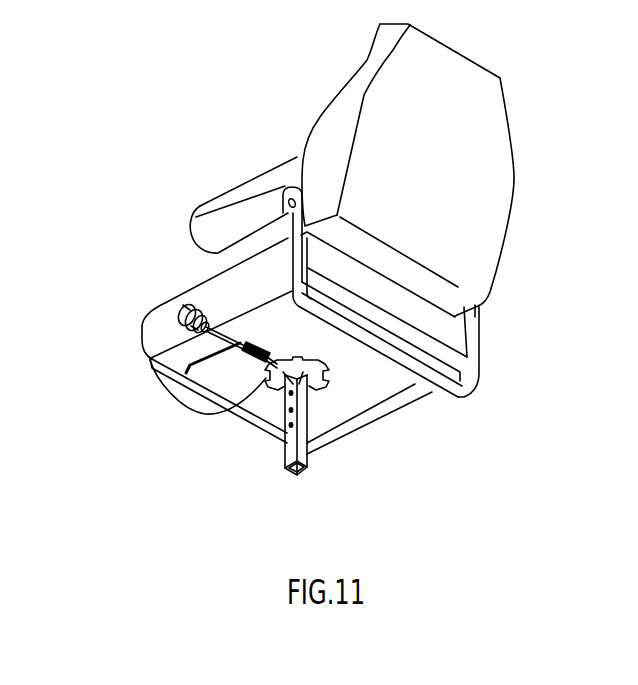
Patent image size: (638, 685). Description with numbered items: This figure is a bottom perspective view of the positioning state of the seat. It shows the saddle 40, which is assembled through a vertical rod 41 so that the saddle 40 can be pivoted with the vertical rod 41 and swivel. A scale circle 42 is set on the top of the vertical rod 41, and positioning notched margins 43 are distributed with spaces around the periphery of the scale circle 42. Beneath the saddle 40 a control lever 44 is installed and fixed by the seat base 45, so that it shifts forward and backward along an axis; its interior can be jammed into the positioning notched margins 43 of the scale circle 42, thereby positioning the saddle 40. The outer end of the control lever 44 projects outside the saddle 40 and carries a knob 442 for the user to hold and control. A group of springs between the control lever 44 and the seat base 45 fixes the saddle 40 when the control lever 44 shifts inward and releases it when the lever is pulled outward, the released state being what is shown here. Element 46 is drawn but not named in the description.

The saddle 40 is at (215, 288).
The vertical rod 41 is at (284, 458).
The scale circle 42 is at (263, 385).
The positioning notched margins 43 is at (273, 392).
The control lever 44 is at (226, 334).
The knob 442 is at (180, 317).
The seat base 45 is at (265, 357).
The guide rail 46 is at (193, 383).